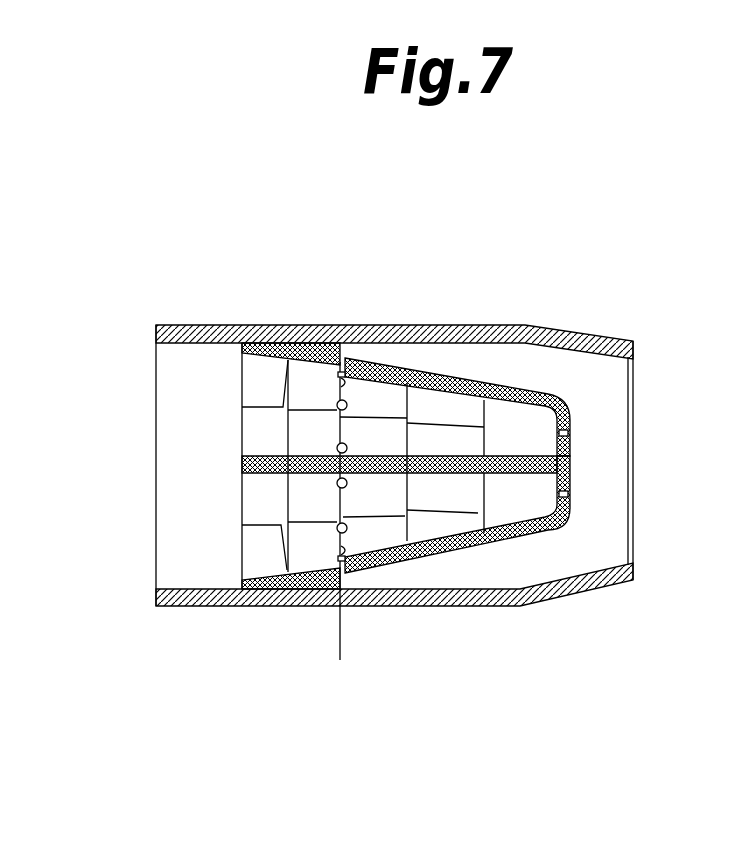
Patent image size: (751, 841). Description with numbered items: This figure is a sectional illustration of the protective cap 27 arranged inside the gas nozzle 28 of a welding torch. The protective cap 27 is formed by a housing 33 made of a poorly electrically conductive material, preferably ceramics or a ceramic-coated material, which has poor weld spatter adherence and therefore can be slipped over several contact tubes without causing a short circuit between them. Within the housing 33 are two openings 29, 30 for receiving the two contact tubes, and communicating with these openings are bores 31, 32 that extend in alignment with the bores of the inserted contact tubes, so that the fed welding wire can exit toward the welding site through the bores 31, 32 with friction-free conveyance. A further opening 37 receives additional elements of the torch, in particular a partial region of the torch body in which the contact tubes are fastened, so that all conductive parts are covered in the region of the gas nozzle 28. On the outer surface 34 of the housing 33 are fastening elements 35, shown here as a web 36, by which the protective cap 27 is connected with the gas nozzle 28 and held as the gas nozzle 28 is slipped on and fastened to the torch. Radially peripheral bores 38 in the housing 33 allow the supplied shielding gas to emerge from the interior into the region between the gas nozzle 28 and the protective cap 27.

The protective cap 27 is at (578, 377).
The gas nozzle 28 is at (222, 603).
The opening 29 is at (507, 430).
The opening 30 is at (448, 515).
The bore 31 is at (572, 432).
The bore 32 is at (566, 495).
The housing 33 is at (493, 543).
The outer surface 34 is at (417, 368).
The fastening elements 35 is at (335, 317).
The web 36 is at (318, 327).
The further opening 37 is at (275, 437).
The bores 38 is at (370, 327).